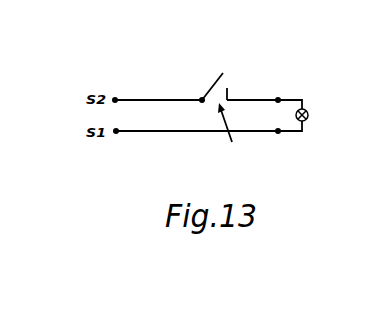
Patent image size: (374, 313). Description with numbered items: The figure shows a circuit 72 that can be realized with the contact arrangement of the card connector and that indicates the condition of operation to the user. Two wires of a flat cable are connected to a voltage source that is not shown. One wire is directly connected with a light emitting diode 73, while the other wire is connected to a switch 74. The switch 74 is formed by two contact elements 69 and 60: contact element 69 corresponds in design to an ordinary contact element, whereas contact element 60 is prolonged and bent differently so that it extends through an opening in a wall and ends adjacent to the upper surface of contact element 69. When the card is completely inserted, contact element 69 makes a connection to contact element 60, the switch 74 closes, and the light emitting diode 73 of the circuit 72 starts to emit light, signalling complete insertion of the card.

The circuit 72 is at (142, 91).
The contact element 69 is at (216, 80).
The contact element 60 is at (233, 93).
The switch 74 is at (230, 137).
The light emitting diode 73 is at (315, 118).